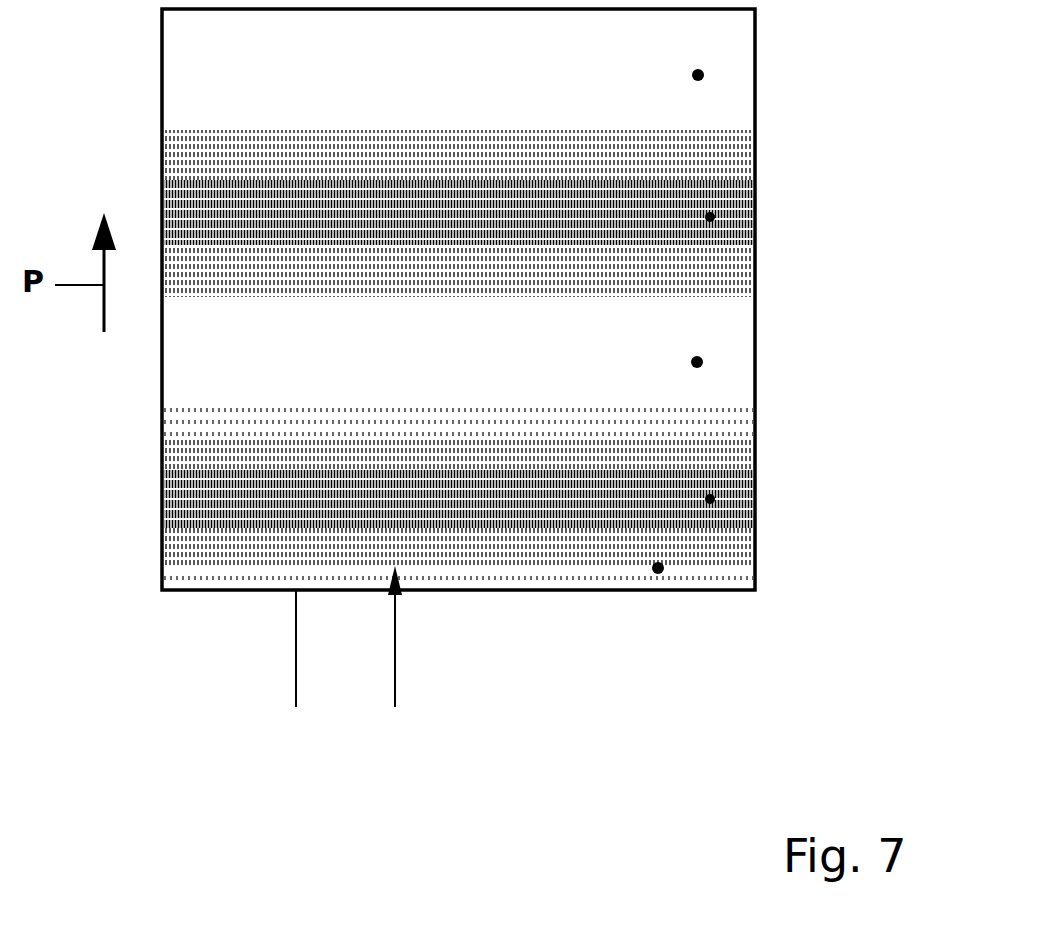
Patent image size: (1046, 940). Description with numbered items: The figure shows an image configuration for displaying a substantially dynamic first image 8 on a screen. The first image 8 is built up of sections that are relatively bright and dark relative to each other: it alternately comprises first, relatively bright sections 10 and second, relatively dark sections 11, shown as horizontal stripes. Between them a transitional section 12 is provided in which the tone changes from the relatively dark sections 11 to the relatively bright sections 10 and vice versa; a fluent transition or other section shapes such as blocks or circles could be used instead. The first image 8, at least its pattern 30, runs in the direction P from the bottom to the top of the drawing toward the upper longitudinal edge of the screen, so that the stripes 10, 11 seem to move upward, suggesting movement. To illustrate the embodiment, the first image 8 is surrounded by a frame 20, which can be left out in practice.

The first image 8 is at (658, 568).
The first relatively bright sections 10 is at (698, 75).
The second relatively dark sections 11 is at (710, 217).
The transitional section 12 is at (805, 147).
The frame 20 is at (297, 667).
The pattern 30 is at (395, 655).